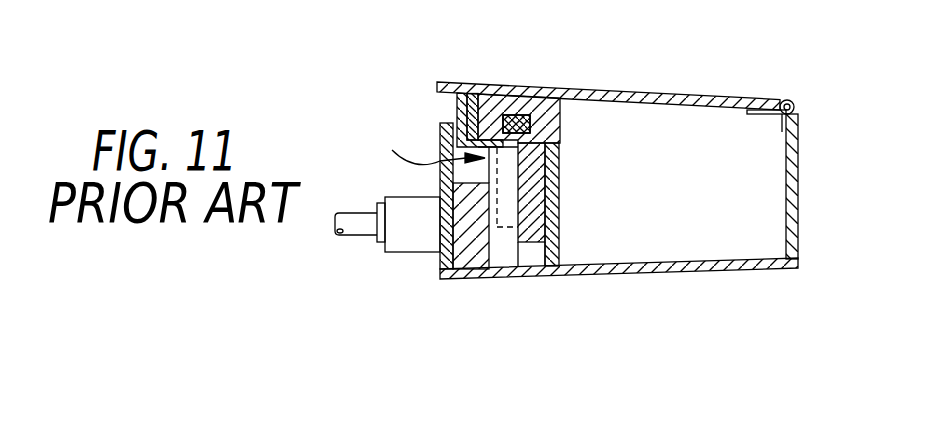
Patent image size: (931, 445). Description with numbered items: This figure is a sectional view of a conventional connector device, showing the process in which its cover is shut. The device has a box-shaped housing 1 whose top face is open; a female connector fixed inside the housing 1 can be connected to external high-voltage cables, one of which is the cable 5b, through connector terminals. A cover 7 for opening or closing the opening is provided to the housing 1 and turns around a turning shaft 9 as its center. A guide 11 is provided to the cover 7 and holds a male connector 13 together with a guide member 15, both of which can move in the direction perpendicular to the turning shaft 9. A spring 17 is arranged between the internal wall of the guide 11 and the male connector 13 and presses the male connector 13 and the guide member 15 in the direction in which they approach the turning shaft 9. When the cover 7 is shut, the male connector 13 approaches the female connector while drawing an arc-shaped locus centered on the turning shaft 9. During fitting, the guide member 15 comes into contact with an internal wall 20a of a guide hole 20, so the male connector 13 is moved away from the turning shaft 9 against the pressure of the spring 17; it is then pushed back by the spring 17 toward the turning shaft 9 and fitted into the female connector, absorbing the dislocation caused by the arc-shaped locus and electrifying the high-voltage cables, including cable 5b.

The housing 1 is at (745, 272).
The high-voltage cable 5b is at (350, 244).
The cover 7 is at (718, 97).
The turning shaft 9 is at (796, 108).
The guide 11 is at (457, 103).
The male connector 13 is at (425, 147).
The guide member 15 is at (557, 168).
The spring 17 is at (468, 96).
The guide hole 20 is at (512, 258).
The internal wall 20a is at (537, 264).